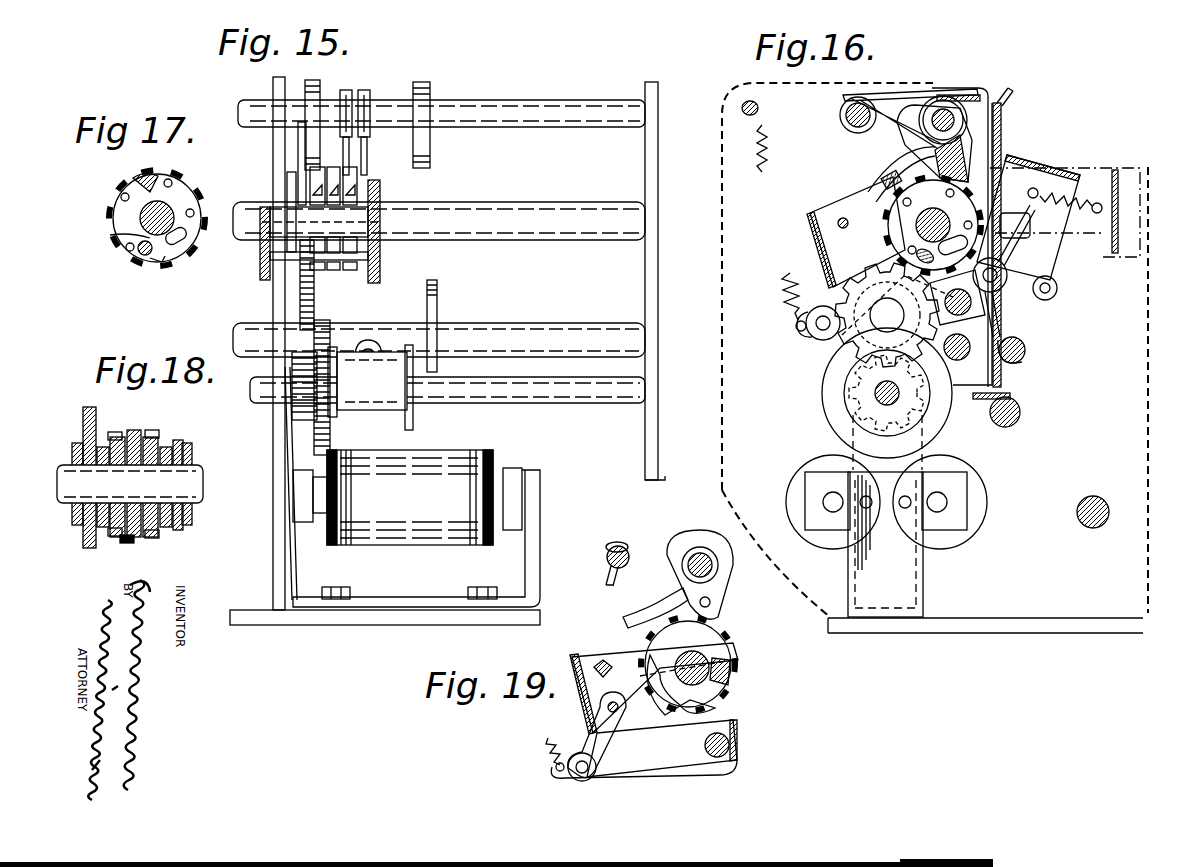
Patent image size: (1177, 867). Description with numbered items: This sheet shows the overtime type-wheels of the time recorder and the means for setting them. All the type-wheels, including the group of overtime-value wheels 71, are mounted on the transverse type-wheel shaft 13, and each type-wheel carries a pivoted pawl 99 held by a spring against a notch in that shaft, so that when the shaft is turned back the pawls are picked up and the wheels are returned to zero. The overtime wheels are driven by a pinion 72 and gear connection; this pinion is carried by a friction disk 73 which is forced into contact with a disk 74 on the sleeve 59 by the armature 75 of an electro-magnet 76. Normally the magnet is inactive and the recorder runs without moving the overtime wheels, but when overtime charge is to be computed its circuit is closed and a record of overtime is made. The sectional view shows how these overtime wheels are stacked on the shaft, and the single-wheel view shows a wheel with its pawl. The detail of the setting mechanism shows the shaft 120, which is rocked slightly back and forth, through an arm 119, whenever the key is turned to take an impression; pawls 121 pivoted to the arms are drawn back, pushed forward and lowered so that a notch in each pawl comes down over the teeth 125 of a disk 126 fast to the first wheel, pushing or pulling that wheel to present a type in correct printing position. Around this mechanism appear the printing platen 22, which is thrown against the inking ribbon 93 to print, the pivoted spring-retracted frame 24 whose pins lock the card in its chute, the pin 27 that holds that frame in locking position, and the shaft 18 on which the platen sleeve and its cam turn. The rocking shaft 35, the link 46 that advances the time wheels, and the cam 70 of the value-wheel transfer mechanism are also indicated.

In FIG. 15, the type-wheel shaft 13 is at (508, 205).
In FIG. 17, the type-wheel shaft 13 is at (165, 207).
In FIG. 18, the type-wheel shaft 13 is at (190, 520).
In FIG. 16, the type-wheel shaft 13 is at (933, 225).
In FIG. 19, the type-wheel shaft 13 is at (705, 673).
In FIG. 16, the shaft 18 is at (1026, 360).
In FIG. 16, the printing platen 22 is at (1003, 300).
In FIG. 16, the spring retracted frame 24 is at (1015, 207).
In FIG. 16, the pin 27 is at (1057, 290).
In FIG. 16, the shaft 35 is at (1089, 530).
In FIG. 15, the link 46 is at (532, 395).
In FIG. 16, the link 46 is at (880, 390).
In FIG. 15, the sleeve 59 is at (370, 387).
In FIG. 16, the sleeve 59 is at (918, 413).
In FIG. 19, the cam 70 is at (670, 700).
In FIG. 15, the overtime-value wheels 71 is at (360, 176).
In FIG. 17, the overtime-value wheels 71 is at (162, 263).
In FIG. 18, the overtime-value wheels 71 is at (140, 472).
In FIG. 15, the pinion 72 is at (298, 418).
In FIG. 16, the pinion 72 is at (862, 405).
In FIG. 15, the friction disk 73 is at (323, 441).
In FIG. 15, the disk 74 is at (327, 446).
In FIG. 16, the disk 74 is at (928, 438).
In FIG. 15, the armature 75 is at (300, 497).
In FIG. 15, the electro-magnet 76 is at (424, 497).
In FIG. 16, the electro-magnet 76 is at (980, 508).
In FIG. 16, the inking ribbon 93 is at (1112, 248).
In FIG. 17, the pawl 99 is at (115, 237).
In FIG. 15, the arm 119 is at (321, 86).
In FIG. 15, the shaft 120 is at (483, 110).
In FIG. 16, the shaft 120 is at (947, 117).
In FIG. 19, the shaft 120 is at (712, 570).
In FIG. 15, the pawl 121 is at (300, 145).
In FIG. 19, the pawl 121 is at (640, 616).
In FIG. 15, the teeth 125 is at (305, 178).
In FIG. 19, the teeth 125 is at (723, 636).
In FIG. 18, the disk 126 is at (125, 523).
In FIG. 19, the disk 126 is at (722, 652).